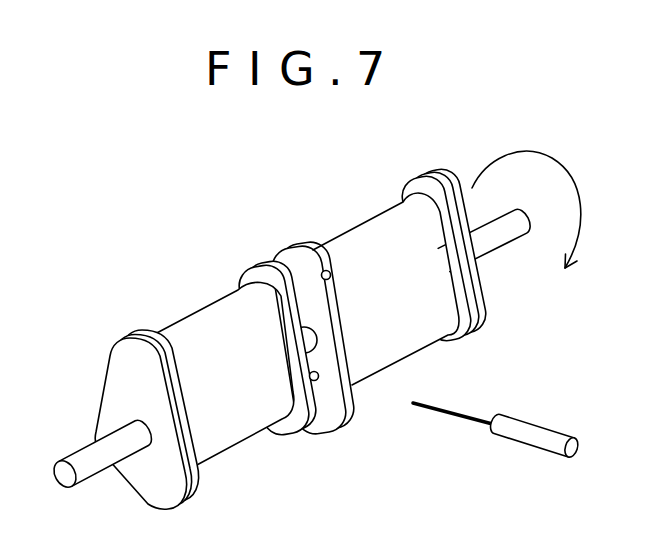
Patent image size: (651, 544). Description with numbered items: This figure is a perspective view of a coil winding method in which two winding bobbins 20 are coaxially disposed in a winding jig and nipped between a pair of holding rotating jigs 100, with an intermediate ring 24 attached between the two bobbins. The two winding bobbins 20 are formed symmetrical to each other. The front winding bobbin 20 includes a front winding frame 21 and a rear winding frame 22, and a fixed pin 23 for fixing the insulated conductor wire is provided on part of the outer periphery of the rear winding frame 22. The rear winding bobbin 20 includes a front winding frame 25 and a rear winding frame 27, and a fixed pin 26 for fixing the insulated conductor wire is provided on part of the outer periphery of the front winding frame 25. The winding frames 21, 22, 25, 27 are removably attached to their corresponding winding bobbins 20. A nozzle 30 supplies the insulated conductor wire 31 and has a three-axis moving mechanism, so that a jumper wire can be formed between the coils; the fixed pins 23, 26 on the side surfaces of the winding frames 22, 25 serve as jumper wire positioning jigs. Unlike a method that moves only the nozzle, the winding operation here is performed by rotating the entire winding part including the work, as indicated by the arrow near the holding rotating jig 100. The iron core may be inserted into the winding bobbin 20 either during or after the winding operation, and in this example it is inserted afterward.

The holding rotating jig 100 is at (261, 313).
The winding bobbin 20 is at (201, 309).
The front winding frame 21 is at (143, 334).
The rear winding frame 22 is at (256, 266).
The fixed pin 23 is at (317, 382).
The intermediate ring 24 is at (317, 346).
The front winding frame 25 is at (297, 247).
The fixed pin 26 is at (330, 278).
The rear winding frame 27 is at (427, 172).
The nozzle 30 is at (550, 420).
The insulated conductor wire 31 is at (467, 412).